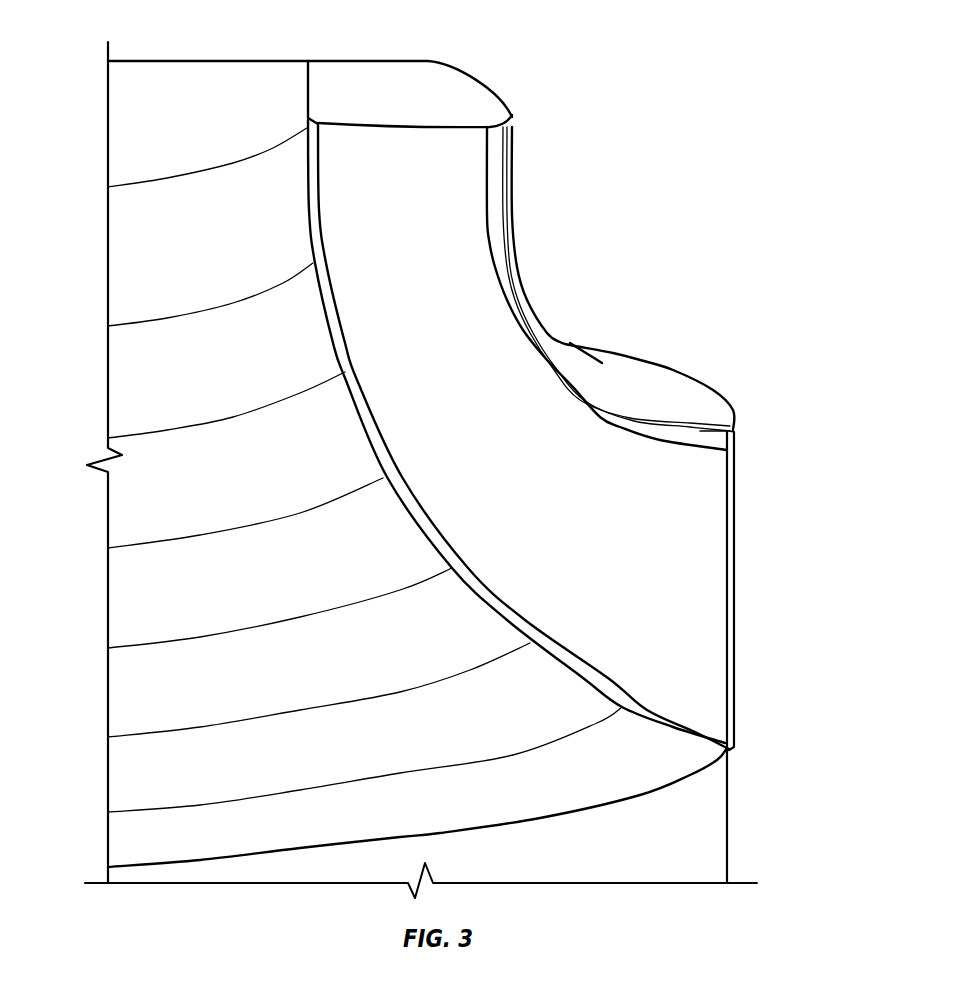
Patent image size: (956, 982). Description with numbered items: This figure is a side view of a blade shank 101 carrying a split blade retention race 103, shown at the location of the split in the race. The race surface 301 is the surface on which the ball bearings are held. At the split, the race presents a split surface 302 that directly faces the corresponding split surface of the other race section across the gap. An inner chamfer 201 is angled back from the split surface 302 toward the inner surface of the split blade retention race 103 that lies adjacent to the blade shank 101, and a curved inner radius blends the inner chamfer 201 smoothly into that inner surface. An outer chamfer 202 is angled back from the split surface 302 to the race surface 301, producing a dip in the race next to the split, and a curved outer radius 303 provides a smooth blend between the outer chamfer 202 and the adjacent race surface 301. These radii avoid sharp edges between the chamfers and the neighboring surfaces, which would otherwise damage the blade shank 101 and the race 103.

The blade shank 101 is at (351, 667).
The split blade retention race 103 is at (591, 517).
The inner chamfer 201 is at (313, 156).
The outer chamfer 202 is at (563, 377).
The race surface 301 is at (663, 385).
The split surface 302 is at (680, 535).
The curved outer radius 303 is at (677, 428).